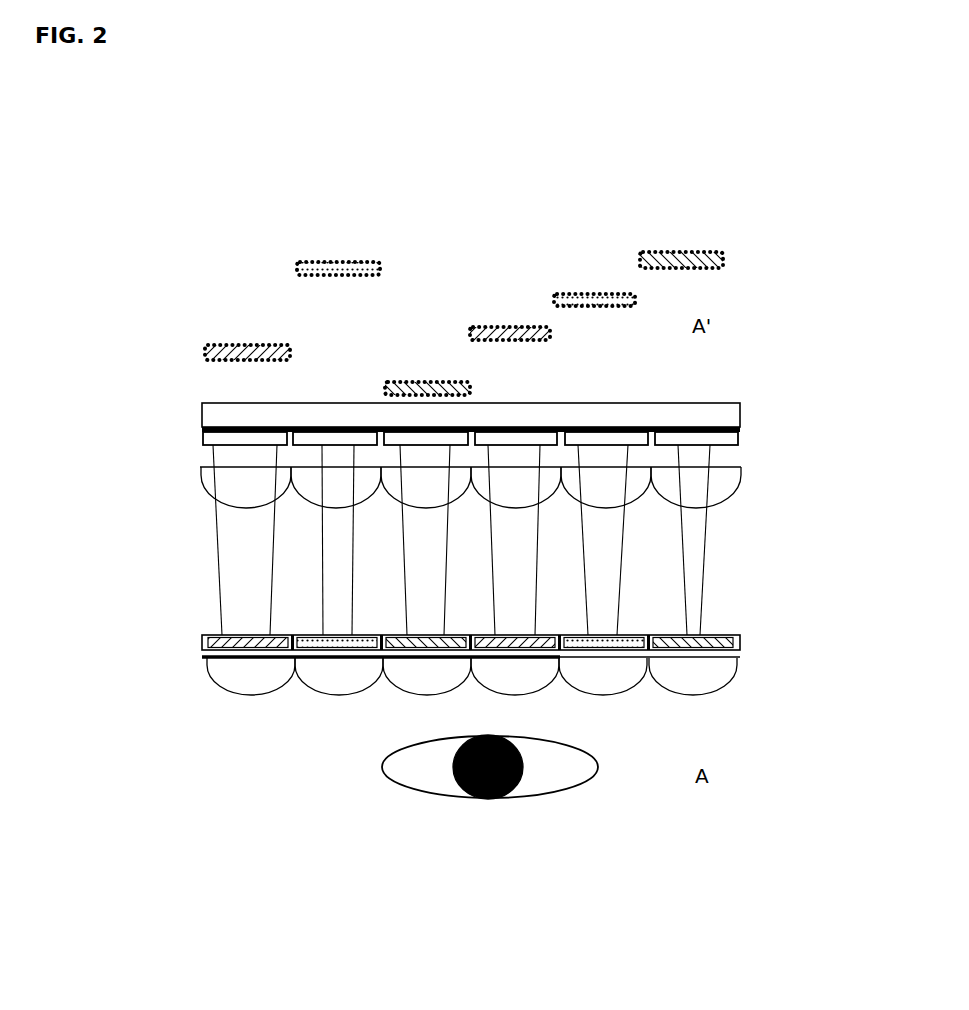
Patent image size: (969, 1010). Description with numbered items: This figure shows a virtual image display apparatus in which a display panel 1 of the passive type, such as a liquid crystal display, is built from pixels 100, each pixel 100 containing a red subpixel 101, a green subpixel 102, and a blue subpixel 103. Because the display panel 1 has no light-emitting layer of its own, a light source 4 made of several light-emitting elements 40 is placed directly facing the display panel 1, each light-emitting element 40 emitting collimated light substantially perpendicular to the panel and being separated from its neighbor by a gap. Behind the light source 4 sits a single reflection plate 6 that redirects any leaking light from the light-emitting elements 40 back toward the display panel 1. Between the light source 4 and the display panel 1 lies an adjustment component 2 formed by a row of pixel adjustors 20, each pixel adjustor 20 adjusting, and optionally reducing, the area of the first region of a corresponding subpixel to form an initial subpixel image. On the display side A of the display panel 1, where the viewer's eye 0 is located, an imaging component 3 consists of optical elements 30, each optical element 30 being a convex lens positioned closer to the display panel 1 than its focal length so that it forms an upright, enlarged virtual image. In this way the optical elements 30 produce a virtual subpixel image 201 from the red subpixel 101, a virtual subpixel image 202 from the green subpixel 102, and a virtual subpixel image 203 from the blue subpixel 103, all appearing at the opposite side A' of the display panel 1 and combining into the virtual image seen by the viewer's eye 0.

The viewer's eye 0 is at (575, 795).
The display panel 1 is at (547, 562).
The pixel 100 is at (683, 559).
The red subpixel 101 is at (515, 640).
The green subpixel 102 is at (602, 640).
The blue subpixel 103 is at (735, 617).
The adjustment component 2 is at (395, 515).
The pixel adjustor 20 is at (208, 483).
The imaging component 3 is at (542, 702).
The optical element 30 is at (703, 678).
The light source 4 is at (396, 398).
The light-emitting element 40 is at (247, 437).
The reflection plate 6 is at (547, 402).
The virtual subpixel image 201 is at (505, 333).
The virtual subpixel image 202 is at (590, 300).
The virtual subpixel image 203 is at (678, 256).